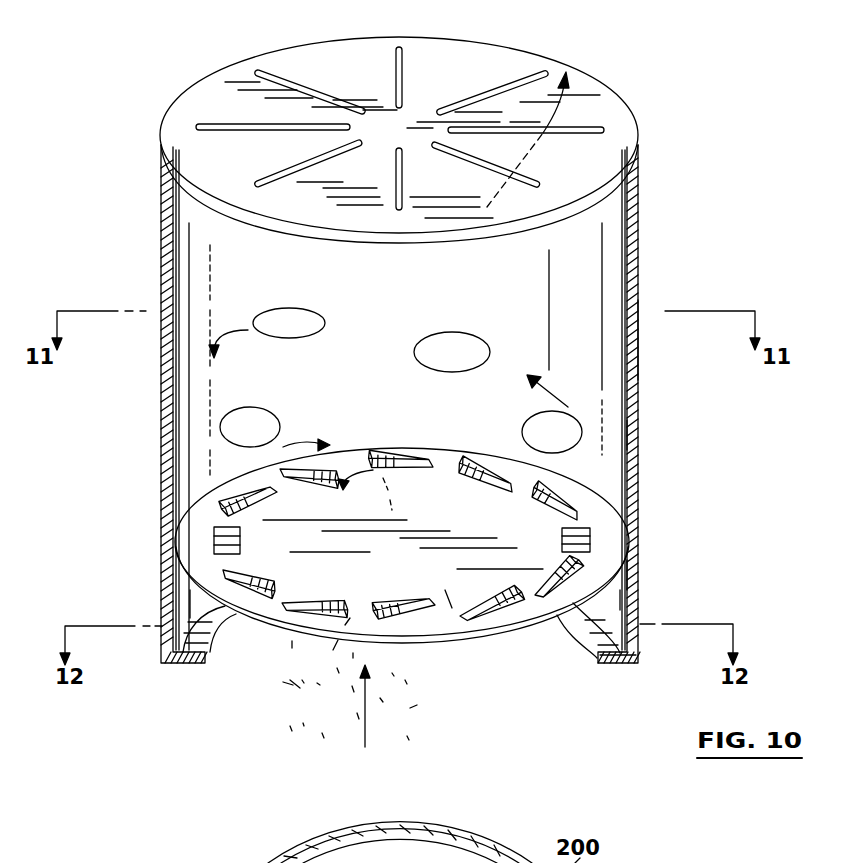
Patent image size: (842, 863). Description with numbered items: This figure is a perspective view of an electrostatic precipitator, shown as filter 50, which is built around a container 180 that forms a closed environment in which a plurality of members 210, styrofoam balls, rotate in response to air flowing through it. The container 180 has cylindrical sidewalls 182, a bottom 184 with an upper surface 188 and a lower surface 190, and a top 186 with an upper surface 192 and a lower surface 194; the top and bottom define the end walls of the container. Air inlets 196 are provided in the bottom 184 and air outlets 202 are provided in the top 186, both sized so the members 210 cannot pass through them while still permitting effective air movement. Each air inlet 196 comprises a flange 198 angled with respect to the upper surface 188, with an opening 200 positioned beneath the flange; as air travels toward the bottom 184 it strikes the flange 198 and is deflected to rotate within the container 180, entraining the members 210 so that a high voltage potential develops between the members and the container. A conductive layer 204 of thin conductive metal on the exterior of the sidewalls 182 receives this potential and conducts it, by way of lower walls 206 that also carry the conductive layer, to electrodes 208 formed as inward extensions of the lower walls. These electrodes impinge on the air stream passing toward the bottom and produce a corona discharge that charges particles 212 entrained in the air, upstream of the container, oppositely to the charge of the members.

The filter 50 is at (722, 148).
The container 180 is at (475, 371).
The sidewalls 182 is at (637, 433).
The bottom 184 is at (640, 577).
The top 186 is at (620, 157).
The upper surface 188 is at (620, 498).
The lower surface 190 is at (640, 618).
The upper surface 192 is at (597, 108).
The lower surface 194 is at (603, 200).
The air inlets 196 is at (560, 478).
The flange 198 is at (397, 622).
The opening 200 is at (445, 590).
The air outlets 202 is at (398, 90).
The conductive layer 204 is at (640, 340).
The lower walls 206 is at (637, 598).
The electrodes 208 is at (608, 652).
The members 210 is at (243, 435).
The particles 212 is at (328, 713).